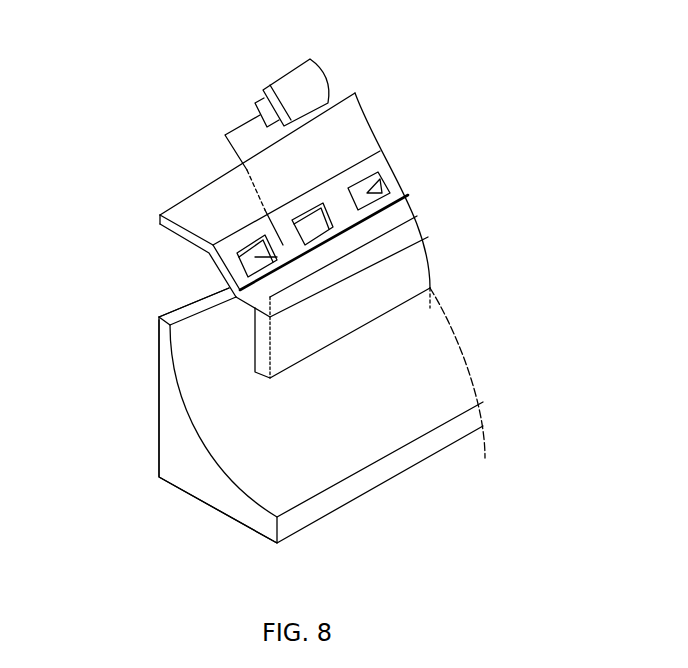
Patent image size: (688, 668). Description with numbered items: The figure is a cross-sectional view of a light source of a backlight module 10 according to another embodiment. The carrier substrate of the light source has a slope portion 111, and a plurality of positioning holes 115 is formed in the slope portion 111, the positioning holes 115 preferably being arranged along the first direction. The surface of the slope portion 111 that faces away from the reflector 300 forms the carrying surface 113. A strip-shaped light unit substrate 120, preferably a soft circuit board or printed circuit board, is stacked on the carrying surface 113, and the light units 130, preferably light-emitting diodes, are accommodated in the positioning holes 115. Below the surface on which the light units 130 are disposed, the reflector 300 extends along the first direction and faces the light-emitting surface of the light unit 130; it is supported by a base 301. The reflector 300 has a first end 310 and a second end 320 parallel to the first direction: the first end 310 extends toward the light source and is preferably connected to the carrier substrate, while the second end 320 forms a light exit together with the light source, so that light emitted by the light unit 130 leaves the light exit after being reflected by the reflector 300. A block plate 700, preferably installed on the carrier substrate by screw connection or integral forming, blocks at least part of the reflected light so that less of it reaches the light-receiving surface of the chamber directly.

The backlight module 10 is at (107, 207).
The slope portion 111 is at (217, 263).
The carrying surface 113 is at (398, 187).
The positioning holes 115 is at (380, 180).
The light unit substrate 120 is at (310, 88).
The light unit 130 is at (253, 108).
The reflector 300 is at (340, 462).
The base 301 is at (215, 497).
The first end 310 is at (182, 310).
The second end 320 is at (405, 450).
The block plate 700 is at (415, 265).